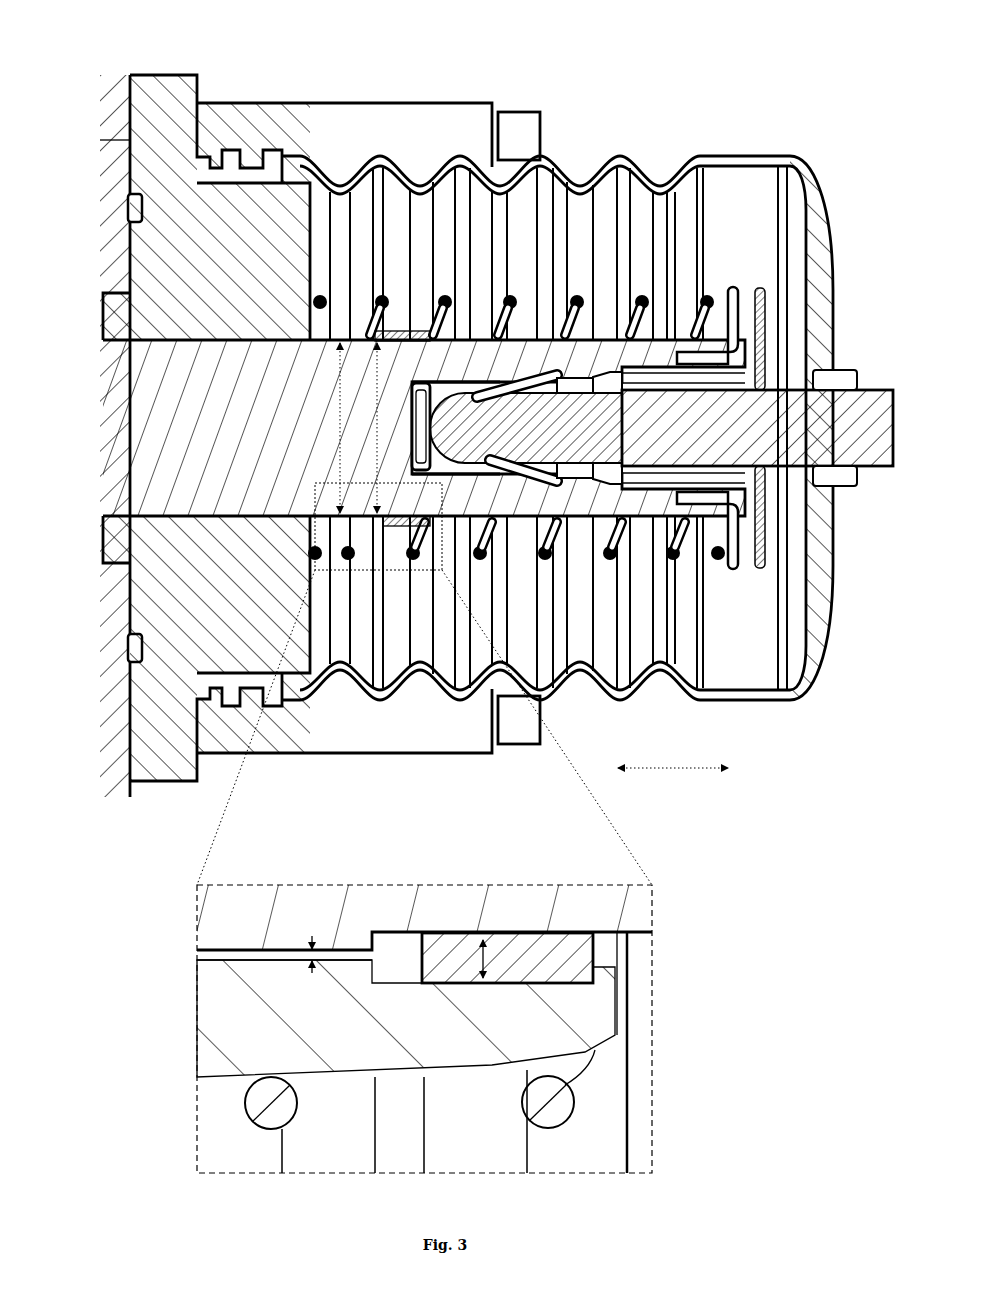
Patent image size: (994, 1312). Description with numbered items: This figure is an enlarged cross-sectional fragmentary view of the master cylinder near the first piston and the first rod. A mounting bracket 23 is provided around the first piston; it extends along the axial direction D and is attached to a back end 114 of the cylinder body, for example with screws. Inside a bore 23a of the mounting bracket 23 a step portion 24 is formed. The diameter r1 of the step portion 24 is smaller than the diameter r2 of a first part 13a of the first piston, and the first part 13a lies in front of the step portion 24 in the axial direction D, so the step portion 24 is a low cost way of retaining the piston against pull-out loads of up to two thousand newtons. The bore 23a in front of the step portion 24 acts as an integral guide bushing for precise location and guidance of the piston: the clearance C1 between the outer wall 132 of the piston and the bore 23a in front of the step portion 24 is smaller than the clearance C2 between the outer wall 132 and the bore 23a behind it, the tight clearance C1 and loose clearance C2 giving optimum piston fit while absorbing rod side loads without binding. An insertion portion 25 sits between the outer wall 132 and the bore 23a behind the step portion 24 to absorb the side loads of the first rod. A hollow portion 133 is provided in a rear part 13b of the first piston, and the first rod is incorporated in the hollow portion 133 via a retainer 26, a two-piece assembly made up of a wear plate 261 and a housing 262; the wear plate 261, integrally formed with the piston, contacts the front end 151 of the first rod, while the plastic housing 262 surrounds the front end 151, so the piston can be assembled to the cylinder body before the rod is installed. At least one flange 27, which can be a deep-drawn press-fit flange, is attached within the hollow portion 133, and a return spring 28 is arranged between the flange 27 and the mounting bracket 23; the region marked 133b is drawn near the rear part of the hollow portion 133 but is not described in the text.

The back end 114 is at (134, 176).
The first part 13a is at (183, 418).
The rear part 13b is at (602, 332).
The mounting bracket 23 is at (258, 248).
The bore 23a is at (179, 508).
The step portion 24 is at (323, 296).
The insertion portion 25 is at (545, 953).
The wear plate 261 is at (400, 330).
The retainer 26 is at (455, 408).
The front end 151 is at (483, 391).
The housing 262 is at (515, 386).
The hollow portion 133 is at (557, 340).
The conductor strip 133b is at (667, 476).
The return spring 28 is at (708, 298).
The flange 27 is at (760, 290).
The outer wall 132 is at (249, 959).
The diameter of the step portion r1 is at (368, 428).
The diameter of the first part r2 is at (330, 428).
The axial direction D is at (673, 778).
The clearance C1 is at (314, 936).
The clearance C2 is at (500, 959).